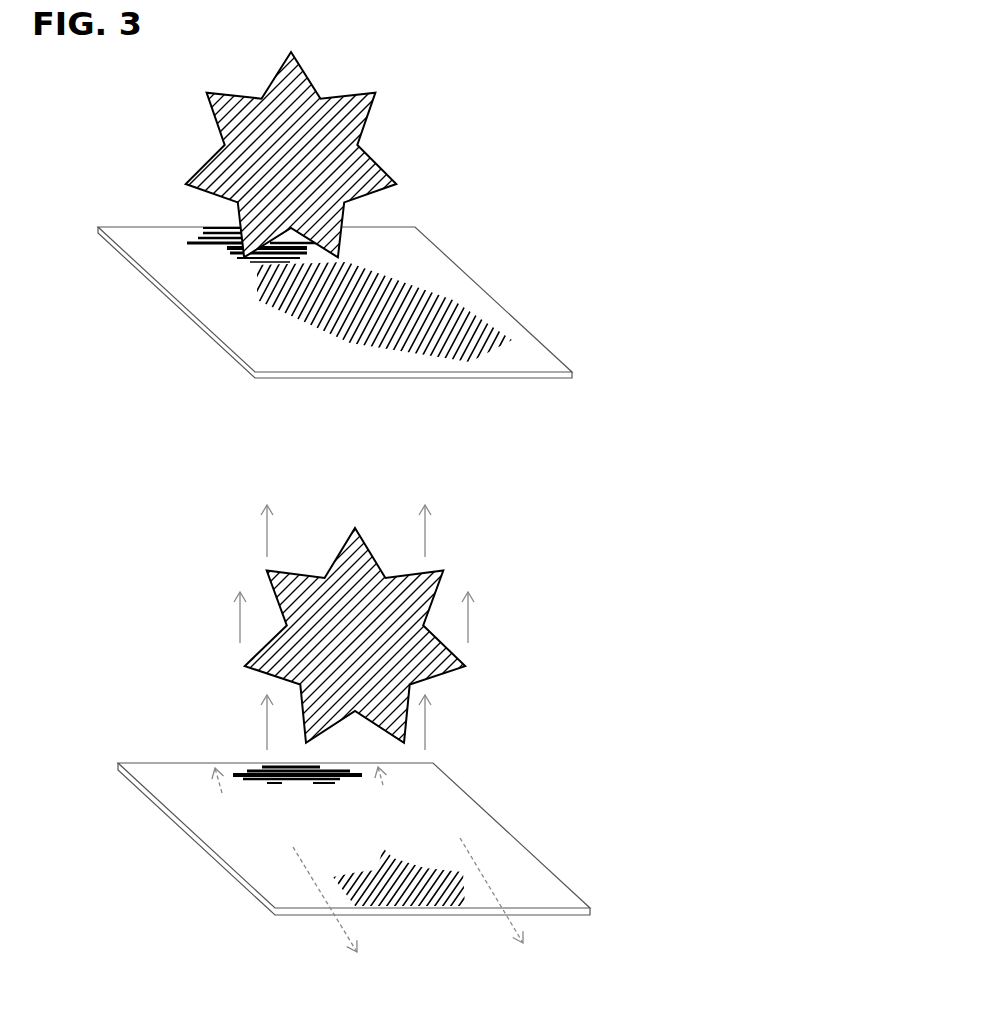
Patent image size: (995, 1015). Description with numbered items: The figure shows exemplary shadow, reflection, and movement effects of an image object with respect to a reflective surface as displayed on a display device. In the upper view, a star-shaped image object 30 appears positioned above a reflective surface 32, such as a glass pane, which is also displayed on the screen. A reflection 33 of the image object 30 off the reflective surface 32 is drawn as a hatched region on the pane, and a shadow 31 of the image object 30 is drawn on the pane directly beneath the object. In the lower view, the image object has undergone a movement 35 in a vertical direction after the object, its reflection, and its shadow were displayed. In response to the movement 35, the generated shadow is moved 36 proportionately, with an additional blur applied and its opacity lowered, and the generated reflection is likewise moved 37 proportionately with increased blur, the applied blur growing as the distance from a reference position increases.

The image object 30 is at (340, 88).
The shadow 31 is at (213, 252).
The reflective surface 32 is at (545, 355).
The reflection 33 is at (418, 295).
The movement of the image object 35 is at (437, 538).
The shadow movement 36 is at (395, 775).
The reflection movement 37 is at (505, 888).